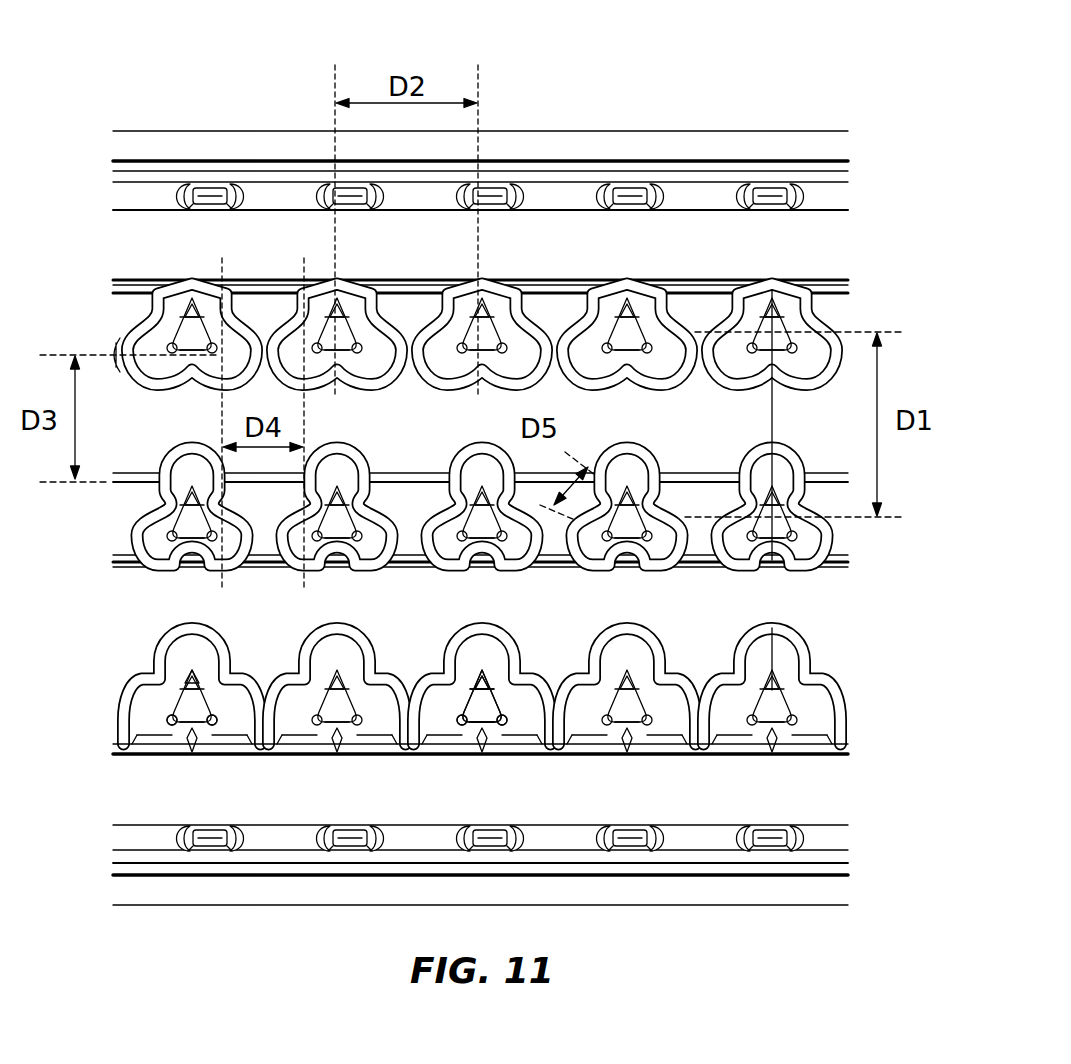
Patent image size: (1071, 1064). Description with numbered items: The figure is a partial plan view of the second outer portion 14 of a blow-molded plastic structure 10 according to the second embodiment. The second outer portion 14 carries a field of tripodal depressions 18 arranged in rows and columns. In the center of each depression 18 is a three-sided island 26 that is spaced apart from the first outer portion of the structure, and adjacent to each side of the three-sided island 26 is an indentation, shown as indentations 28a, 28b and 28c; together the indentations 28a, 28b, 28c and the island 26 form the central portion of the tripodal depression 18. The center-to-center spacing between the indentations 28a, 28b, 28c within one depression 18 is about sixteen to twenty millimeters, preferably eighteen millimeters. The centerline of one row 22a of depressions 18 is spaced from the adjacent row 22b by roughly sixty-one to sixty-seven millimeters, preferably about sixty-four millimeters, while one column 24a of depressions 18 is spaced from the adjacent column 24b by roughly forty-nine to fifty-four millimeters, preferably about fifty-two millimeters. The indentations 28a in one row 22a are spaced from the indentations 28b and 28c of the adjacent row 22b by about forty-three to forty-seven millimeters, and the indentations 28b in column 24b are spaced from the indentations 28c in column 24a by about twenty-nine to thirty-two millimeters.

The structure 10 is at (807, 61).
The second outer portion 14 is at (830, 620).
The tripodal depression 18 is at (436, 454).
The row of tripodal depressions 22a is at (431, 489).
The adjacent row of tripodal depressions 22b is at (87, 333).
The column of tripodal depressions 24a is at (335, 52).
The adjacent column of tripodal depressions 24b is at (478, 52).
The three-sided island 26 is at (487, 706).
The indentation 28a is at (192, 672).
The indentation 28b is at (166, 748).
The indentation 28c is at (214, 748).